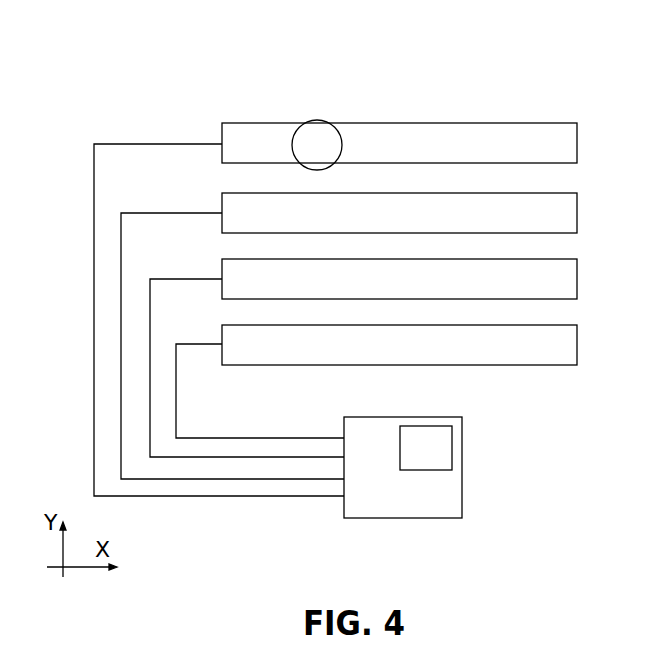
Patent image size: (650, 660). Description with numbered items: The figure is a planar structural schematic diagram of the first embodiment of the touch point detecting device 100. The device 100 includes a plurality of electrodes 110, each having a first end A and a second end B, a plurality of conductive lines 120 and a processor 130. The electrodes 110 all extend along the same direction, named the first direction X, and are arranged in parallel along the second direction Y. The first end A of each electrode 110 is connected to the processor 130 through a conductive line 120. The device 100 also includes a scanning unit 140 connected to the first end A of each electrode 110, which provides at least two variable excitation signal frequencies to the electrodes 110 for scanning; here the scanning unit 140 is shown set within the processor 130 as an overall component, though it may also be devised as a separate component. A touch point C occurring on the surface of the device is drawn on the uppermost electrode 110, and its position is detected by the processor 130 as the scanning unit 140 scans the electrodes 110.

The touch point detecting device 100 is at (228, 103).
The electrodes 110 is at (480, 132).
The conductive lines 120 is at (93, 238).
The processor 130 is at (403, 467).
The scanning unit 140 is at (442, 453).
The touch point C is at (320, 137).